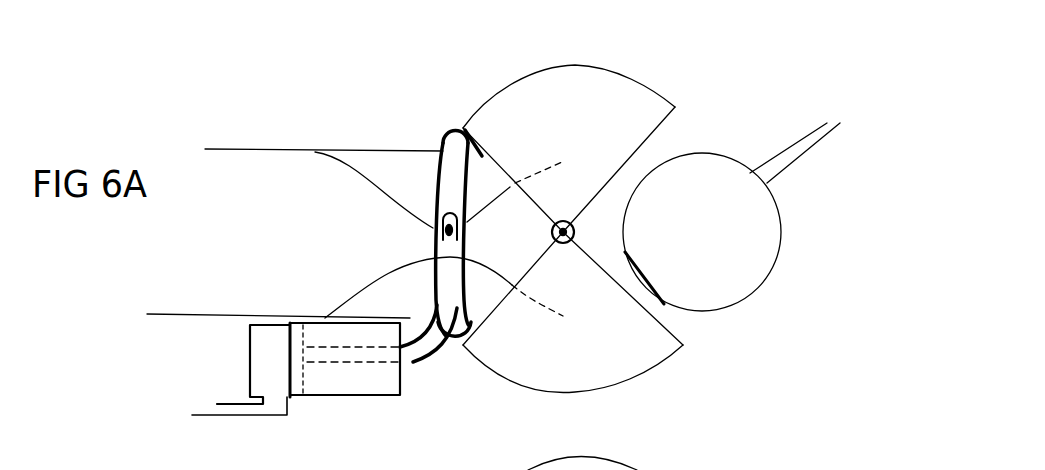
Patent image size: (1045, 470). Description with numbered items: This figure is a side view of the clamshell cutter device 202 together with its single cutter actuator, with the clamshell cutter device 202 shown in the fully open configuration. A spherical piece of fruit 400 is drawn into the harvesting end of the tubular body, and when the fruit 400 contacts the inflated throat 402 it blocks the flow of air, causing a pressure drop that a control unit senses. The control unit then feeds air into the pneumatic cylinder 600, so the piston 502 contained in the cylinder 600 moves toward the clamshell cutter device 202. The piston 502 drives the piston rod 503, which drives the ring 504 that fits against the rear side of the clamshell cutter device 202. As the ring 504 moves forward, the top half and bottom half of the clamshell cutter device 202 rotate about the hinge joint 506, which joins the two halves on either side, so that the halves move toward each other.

The clamshell cutter device 202 is at (655, 90).
The fruit 400 is at (760, 283).
The inflated throat 402 is at (407, 172).
The pneumatic piston 502 is at (340, 365).
The piston rod 503 is at (413, 362).
The ring 504 is at (457, 140).
The hinge joint 506 is at (565, 245).
The pneumatic cylinder 600 is at (250, 370).